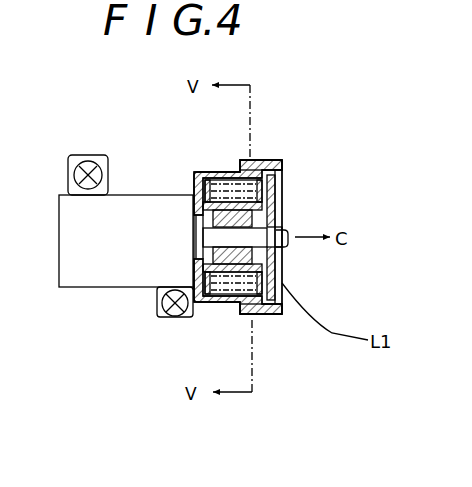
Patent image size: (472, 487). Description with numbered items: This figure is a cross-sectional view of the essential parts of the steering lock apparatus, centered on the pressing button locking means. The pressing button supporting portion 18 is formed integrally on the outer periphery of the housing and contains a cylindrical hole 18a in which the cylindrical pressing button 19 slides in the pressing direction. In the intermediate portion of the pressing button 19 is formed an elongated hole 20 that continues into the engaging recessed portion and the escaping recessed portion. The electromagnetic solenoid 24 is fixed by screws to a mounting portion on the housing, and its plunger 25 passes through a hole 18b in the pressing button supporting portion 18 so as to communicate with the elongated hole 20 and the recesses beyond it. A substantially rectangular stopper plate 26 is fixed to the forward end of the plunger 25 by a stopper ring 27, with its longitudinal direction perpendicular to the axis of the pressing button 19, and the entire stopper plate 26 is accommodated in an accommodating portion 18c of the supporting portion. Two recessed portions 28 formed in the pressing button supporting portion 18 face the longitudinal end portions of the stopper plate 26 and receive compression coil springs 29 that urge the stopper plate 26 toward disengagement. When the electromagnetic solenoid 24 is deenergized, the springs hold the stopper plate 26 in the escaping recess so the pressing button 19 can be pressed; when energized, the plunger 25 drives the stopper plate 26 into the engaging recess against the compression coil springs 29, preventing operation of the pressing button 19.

The pressing button supporting portion 18 is at (256, 320).
The cylindrical hole 18a is at (193, 196).
The hole 18b is at (205, 256).
The accommodating portion 18c is at (283, 300).
The pressing button 19 is at (282, 208).
The elongated hole 20 is at (215, 226).
The electromagnetic solenoid 24 is at (140, 202).
The plunger 25 is at (286, 243).
The stopper plate 26 is at (282, 198).
The stopper ring 27 is at (283, 250).
The recessed portions 28 is at (222, 180).
The compression coil springs 29 is at (263, 166).